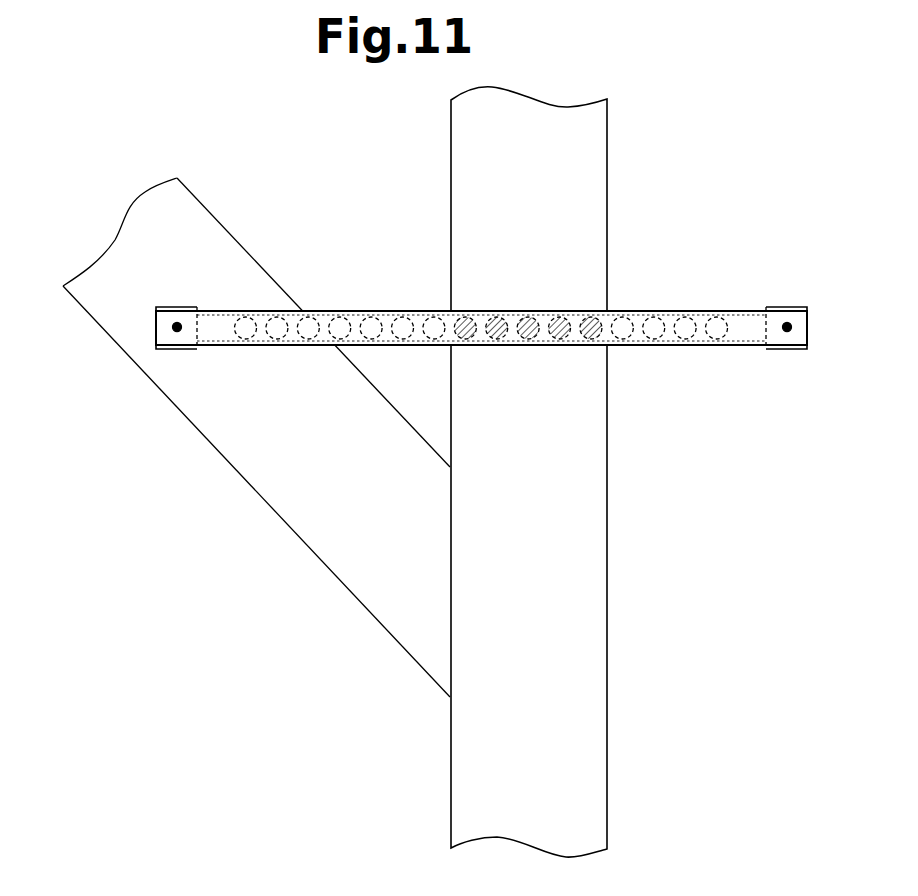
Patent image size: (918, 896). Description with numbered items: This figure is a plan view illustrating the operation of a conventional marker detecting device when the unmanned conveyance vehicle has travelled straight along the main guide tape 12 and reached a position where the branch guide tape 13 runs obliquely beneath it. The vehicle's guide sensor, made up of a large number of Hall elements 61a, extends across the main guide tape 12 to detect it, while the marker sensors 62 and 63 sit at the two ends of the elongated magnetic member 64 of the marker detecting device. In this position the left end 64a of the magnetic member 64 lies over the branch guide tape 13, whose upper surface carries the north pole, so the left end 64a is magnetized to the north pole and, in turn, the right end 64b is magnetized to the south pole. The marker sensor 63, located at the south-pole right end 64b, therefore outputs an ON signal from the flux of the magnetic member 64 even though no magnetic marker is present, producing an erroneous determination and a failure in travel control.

The main guide tape 12 is at (598, 160).
The branch guide tape 13 is at (290, 498).
The Hall elements 61a is at (390, 310).
The marker sensor 62 is at (182, 349).
The marker sensor 63 is at (789, 350).
The magnetic member 64 is at (697, 312).
The left end 64a is at (173, 327).
The right end 64b is at (788, 323).